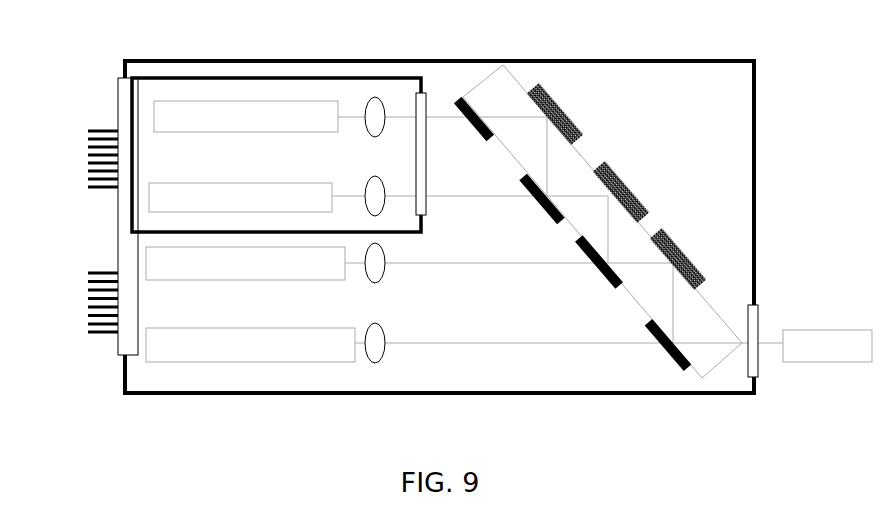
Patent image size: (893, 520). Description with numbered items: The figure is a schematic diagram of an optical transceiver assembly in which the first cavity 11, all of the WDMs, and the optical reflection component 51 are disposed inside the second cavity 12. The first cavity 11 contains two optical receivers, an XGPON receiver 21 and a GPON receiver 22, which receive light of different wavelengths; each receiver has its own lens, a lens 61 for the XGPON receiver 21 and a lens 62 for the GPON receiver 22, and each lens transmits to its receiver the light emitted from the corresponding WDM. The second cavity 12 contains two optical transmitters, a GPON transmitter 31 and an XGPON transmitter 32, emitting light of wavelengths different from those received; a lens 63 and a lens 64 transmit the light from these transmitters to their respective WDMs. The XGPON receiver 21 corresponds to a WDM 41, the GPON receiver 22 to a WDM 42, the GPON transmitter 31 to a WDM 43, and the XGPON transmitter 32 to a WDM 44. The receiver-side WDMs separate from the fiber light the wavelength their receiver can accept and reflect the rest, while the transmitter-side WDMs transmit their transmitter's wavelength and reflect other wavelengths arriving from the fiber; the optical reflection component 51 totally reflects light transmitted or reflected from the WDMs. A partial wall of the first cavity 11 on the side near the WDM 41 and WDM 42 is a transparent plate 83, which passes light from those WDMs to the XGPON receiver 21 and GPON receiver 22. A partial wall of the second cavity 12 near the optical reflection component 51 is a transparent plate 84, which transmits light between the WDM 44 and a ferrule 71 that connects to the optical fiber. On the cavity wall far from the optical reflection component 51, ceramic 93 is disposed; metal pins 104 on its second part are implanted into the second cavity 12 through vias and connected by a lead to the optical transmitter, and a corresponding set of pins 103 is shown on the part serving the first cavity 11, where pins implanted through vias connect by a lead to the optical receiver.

The first cavity 11 is at (233, 77).
The second cavity 12 is at (233, 393).
The XGPON receiver 21 is at (247, 133).
The GPON receiver 22 is at (272, 182).
The GPON transmitter 31 is at (238, 281).
The XGPON transmitter 32 is at (252, 327).
The WDM 41 is at (468, 120).
The WDM 42 is at (538, 207).
The WDM 43 is at (595, 265).
The WDM 44 is at (660, 346).
The optical reflection component 51 is at (561, 110).
The lens 61 is at (380, 138).
The lens 62 is at (372, 178).
The lens 63 is at (382, 283).
The lens 64 is at (372, 321).
The ferrule 71 is at (793, 328).
The transparent plate 83 is at (427, 217).
The transparent plate 84 is at (760, 362).
The ceramic 93 is at (118, 113).
The receiver pins 103 is at (82, 130).
The metal pins 104 is at (82, 272).